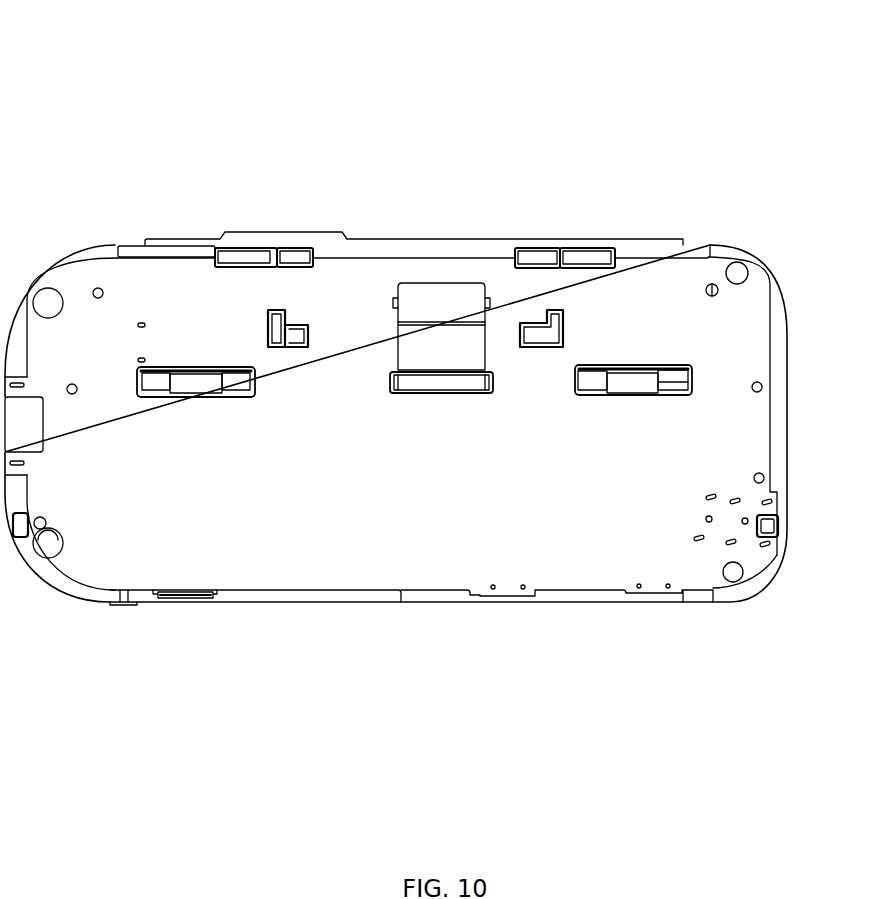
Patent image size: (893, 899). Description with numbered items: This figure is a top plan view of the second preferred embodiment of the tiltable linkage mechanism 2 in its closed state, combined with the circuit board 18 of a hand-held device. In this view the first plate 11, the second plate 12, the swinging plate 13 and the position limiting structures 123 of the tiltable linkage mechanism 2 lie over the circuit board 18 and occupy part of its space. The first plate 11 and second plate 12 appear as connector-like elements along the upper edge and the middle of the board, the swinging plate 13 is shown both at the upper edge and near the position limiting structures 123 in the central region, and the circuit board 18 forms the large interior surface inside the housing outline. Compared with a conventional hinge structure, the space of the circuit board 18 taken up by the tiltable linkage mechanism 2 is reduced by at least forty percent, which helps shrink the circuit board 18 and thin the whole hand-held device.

The tiltable linkage mechanism 2 is at (357, 225).
The first plate 11 is at (632, 380).
The second plate 12 is at (582, 260).
The swinging plate 13 is at (292, 337).
The circuit board 18 is at (231, 527).
The position limiting structures 123 is at (283, 310).